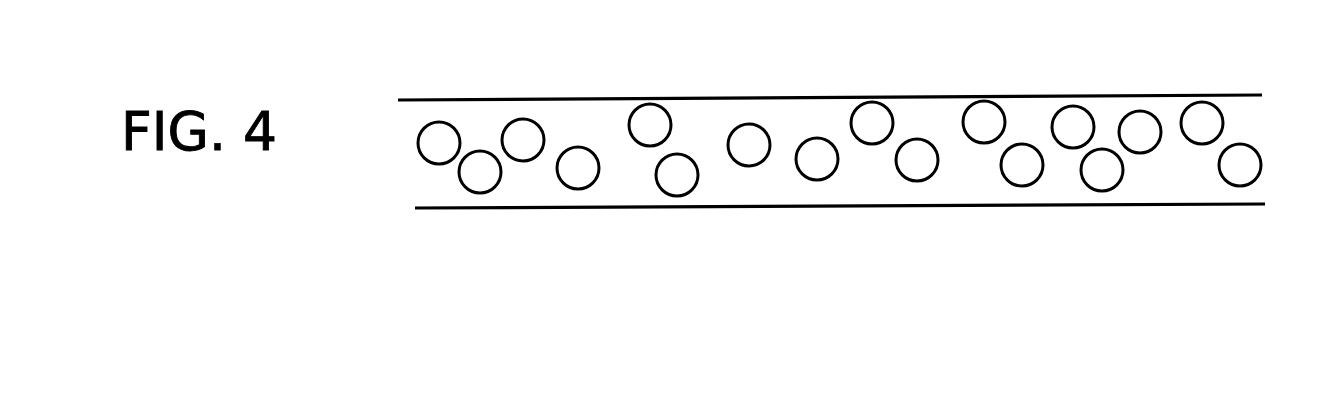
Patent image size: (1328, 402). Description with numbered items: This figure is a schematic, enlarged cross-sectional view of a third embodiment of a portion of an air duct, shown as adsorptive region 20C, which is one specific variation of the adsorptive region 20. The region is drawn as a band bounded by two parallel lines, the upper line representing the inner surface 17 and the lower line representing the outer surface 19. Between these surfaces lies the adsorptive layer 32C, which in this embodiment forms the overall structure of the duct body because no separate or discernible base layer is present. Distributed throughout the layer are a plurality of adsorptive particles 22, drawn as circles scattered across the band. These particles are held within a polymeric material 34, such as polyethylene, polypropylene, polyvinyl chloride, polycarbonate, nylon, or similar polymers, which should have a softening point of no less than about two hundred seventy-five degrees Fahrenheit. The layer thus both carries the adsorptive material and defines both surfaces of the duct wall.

The inner surface 17 is at (545, 99).
The outer surface 19 is at (488, 235).
The adsorptive region 20 is at (1070, 41).
The adsorptive region 20C is at (1085, 71).
The adsorptive particles 22 is at (653, 121).
The adsorptive layer 32C is at (408, 133).
The polymeric material 34 is at (938, 120).